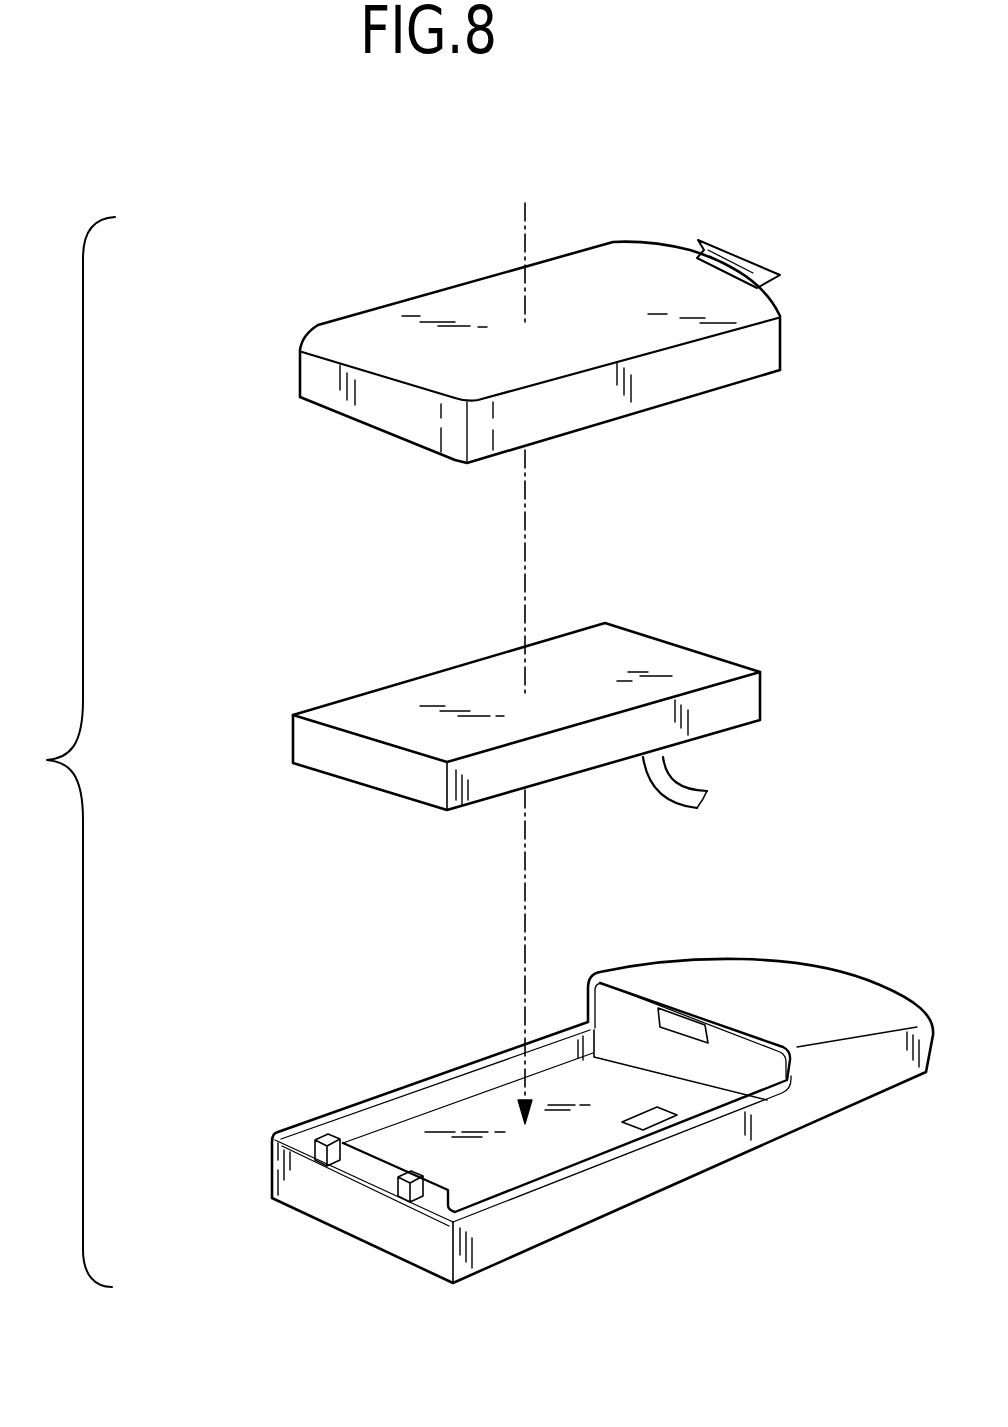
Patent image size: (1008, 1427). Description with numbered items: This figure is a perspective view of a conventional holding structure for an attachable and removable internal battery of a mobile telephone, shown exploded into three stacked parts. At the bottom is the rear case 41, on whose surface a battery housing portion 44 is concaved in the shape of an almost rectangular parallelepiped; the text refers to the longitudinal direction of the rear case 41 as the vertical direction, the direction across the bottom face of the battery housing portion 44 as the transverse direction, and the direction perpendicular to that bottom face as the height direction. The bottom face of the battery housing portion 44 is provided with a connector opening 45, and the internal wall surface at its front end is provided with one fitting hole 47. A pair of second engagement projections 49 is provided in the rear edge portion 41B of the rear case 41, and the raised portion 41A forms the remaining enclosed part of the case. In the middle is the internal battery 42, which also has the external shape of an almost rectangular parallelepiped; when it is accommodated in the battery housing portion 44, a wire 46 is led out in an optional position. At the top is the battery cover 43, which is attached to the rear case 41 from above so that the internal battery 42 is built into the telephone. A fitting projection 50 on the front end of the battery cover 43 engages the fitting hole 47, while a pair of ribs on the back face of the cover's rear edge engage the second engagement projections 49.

The rear case 41 is at (727, 1163).
The cover portion of case 41A is at (803, 987).
The rear edge portion 41B is at (367, 1175).
The internal battery 42 is at (681, 660).
The battery cover 43 is at (663, 390).
The battery housing portion 44 is at (517, 1158).
The connector opening 45 is at (648, 1116).
The wire 46 is at (663, 780).
The fitting hole 47 is at (682, 1023).
The second engagement projections 49 is at (278, 1200).
The fitting projection 50 is at (743, 257).